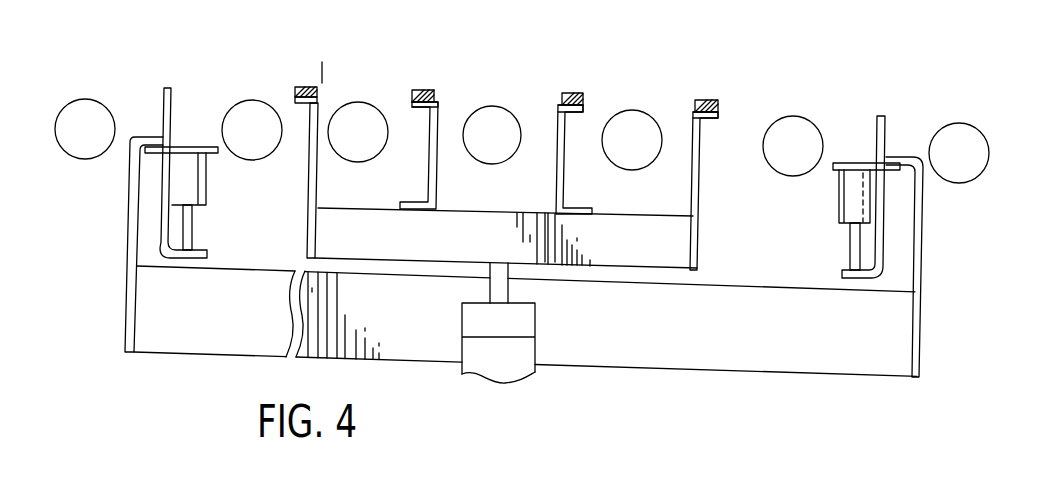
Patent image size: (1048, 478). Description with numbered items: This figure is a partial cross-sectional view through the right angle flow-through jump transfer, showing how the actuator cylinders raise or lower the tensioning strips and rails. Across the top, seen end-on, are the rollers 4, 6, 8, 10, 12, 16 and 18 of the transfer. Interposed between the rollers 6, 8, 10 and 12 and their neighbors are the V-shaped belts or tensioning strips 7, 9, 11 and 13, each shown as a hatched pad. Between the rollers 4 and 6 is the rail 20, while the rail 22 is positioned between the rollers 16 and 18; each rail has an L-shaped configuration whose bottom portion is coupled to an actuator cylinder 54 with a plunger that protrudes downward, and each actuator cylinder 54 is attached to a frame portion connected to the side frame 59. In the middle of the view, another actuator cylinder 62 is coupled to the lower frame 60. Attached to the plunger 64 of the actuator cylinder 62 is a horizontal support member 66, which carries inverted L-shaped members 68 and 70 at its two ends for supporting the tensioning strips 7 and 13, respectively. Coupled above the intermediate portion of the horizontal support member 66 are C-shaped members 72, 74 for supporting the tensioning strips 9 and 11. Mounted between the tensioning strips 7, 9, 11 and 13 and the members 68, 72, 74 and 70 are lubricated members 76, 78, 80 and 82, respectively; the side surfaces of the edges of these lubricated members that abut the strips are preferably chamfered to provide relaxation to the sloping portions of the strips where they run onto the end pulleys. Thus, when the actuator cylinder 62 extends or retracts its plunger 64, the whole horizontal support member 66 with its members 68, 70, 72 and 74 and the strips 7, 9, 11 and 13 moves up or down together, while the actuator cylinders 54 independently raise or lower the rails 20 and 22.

The roller 4 is at (970, 124).
The roller 6 is at (812, 118).
The tensioning strip 7 is at (718, 104).
The roller 8 is at (650, 113).
The tensioning strip 9 is at (585, 96).
The roller 10 is at (498, 108).
The tensioning strip 11 is at (436, 92).
The roller 12 is at (372, 105).
The tensioning strip 13 is at (318, 86).
The roller 16 is at (255, 100).
The roller 18 is at (90, 98).
The rail 20 is at (886, 122).
The rail 22 is at (170, 96).
The actuator cylinder 54 is at (198, 198).
The side frame 59 is at (923, 258).
The lower frame 60 is at (872, 360).
The actuator cylinder 62 is at (530, 327).
The plunger 64 is at (508, 290).
The horizontal support member 66 is at (642, 258).
The inverted L-shaped member 68 is at (310, 192).
The inverted L-shaped member 70 is at (702, 146).
The C-shaped member 72 is at (440, 204).
The C-shaped member 74 is at (565, 196).
The lubricated member 76 is at (718, 110).
The lubricated member 78 is at (585, 104).
The lubricated member 80 is at (437, 100).
The lubricated member 82 is at (318, 97).